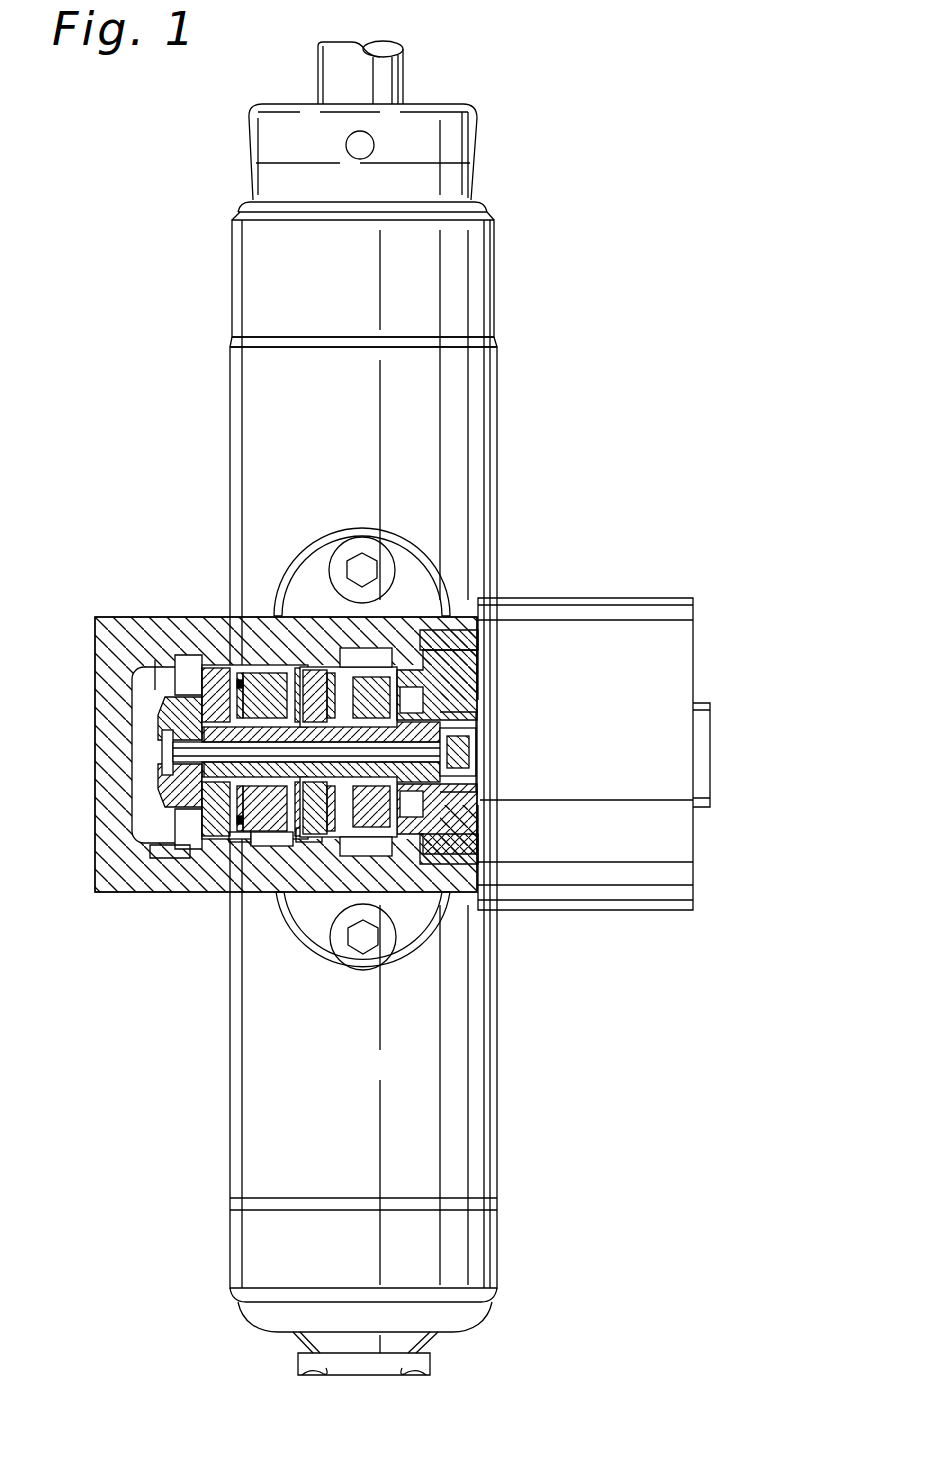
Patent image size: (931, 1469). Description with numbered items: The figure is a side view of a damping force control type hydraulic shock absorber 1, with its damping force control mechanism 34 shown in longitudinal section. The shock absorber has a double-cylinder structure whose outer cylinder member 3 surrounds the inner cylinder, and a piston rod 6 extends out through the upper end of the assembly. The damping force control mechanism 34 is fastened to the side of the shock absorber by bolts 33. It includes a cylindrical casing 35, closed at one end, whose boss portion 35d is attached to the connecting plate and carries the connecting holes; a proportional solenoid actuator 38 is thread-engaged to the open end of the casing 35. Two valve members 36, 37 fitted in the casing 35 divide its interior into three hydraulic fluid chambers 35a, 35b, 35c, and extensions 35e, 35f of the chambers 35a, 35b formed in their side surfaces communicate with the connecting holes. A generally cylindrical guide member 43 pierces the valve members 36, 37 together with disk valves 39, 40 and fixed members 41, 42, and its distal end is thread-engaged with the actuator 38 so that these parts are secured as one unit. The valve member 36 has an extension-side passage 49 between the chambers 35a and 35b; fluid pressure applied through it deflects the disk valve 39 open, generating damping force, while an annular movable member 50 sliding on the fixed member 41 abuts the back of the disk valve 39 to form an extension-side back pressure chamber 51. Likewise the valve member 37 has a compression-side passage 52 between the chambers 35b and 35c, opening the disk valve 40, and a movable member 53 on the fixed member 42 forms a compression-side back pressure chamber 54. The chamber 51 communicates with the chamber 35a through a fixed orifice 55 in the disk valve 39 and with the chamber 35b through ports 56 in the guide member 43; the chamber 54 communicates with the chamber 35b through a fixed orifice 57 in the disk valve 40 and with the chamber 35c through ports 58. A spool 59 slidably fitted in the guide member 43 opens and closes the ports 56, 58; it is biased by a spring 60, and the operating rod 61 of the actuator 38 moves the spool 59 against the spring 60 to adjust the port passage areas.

The damping force control type hydraulic shock absorber 1 is at (641, 304).
The outer cylinder member 3 is at (474, 256).
The piston rod 6 is at (388, 80).
The bolts 33 is at (368, 566).
The damping force control mechanism 34 is at (78, 645).
The cylindrical casing 35 is at (100, 708).
The hydraulic fluid chamber 35a is at (140, 690).
The hydraulic fluid chamber 35b is at (262, 665).
The hydraulic fluid chamber 35c is at (420, 665).
The boss portion 35d is at (425, 895).
The extension of hydraulic fluid chamber 35e is at (175, 678).
The extension of hydraulic fluid chamber 35f is at (281, 913).
The valve member 36 is at (215, 840).
The valve member 37 is at (318, 880).
The proportional solenoid actuator 38 is at (682, 630).
The disk valve 39 is at (238, 850).
The disk valve 40 is at (385, 652).
The fixed member 41 is at (250, 672).
The fixed member 42 is at (455, 655).
The guide member 43 is at (170, 785).
The extension-side passage 49 is at (160, 840).
The movable member 50 is at (190, 710).
The extension-side back pressure chamber 51 is at (255, 855).
The compression-side passage 52 is at (285, 672).
The movable member 53 is at (368, 860).
The compression-side back pressure chamber 54 is at (485, 910).
The fixed orifice 55 is at (168, 660).
The ports 56 is at (300, 660).
The fixed orifice 57 is at (335, 870).
The ports 58 is at (452, 740).
The spool 59 is at (190, 800).
The spring 60 is at (165, 775).
The operating rod 61 is at (476, 745).